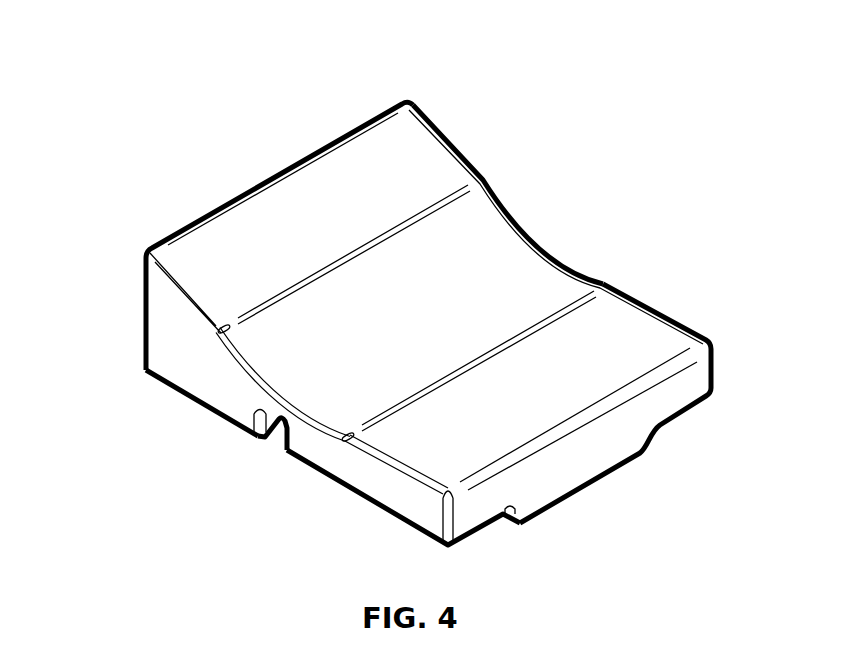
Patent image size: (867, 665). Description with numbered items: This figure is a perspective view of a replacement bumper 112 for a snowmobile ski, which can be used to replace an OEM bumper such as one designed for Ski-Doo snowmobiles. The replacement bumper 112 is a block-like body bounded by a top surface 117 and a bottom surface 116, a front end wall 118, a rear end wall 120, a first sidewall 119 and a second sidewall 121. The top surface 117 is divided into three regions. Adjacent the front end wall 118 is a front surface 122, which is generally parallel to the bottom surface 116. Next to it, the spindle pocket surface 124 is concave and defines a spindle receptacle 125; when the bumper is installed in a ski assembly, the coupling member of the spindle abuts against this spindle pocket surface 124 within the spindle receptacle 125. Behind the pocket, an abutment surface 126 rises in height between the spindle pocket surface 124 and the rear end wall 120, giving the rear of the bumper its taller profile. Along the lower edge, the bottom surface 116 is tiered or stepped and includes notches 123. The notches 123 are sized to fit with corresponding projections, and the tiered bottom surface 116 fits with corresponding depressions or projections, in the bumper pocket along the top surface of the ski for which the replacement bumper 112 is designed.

The replacement bumper 112 is at (163, 57).
The bottom surface 116 is at (352, 492).
The top surface 117 is at (610, 313).
The front end wall 118 is at (693, 381).
The first sidewall 119 is at (175, 352).
The rear end wall 120 is at (146, 311).
The second sidewall 121 is at (472, 165).
The front surface 122 is at (673, 342).
The notches 123 is at (278, 430).
The spindle pocket surface 124 is at (510, 265).
The spindle receptacle 125 is at (488, 238).
The abutment surface 126 is at (430, 140).